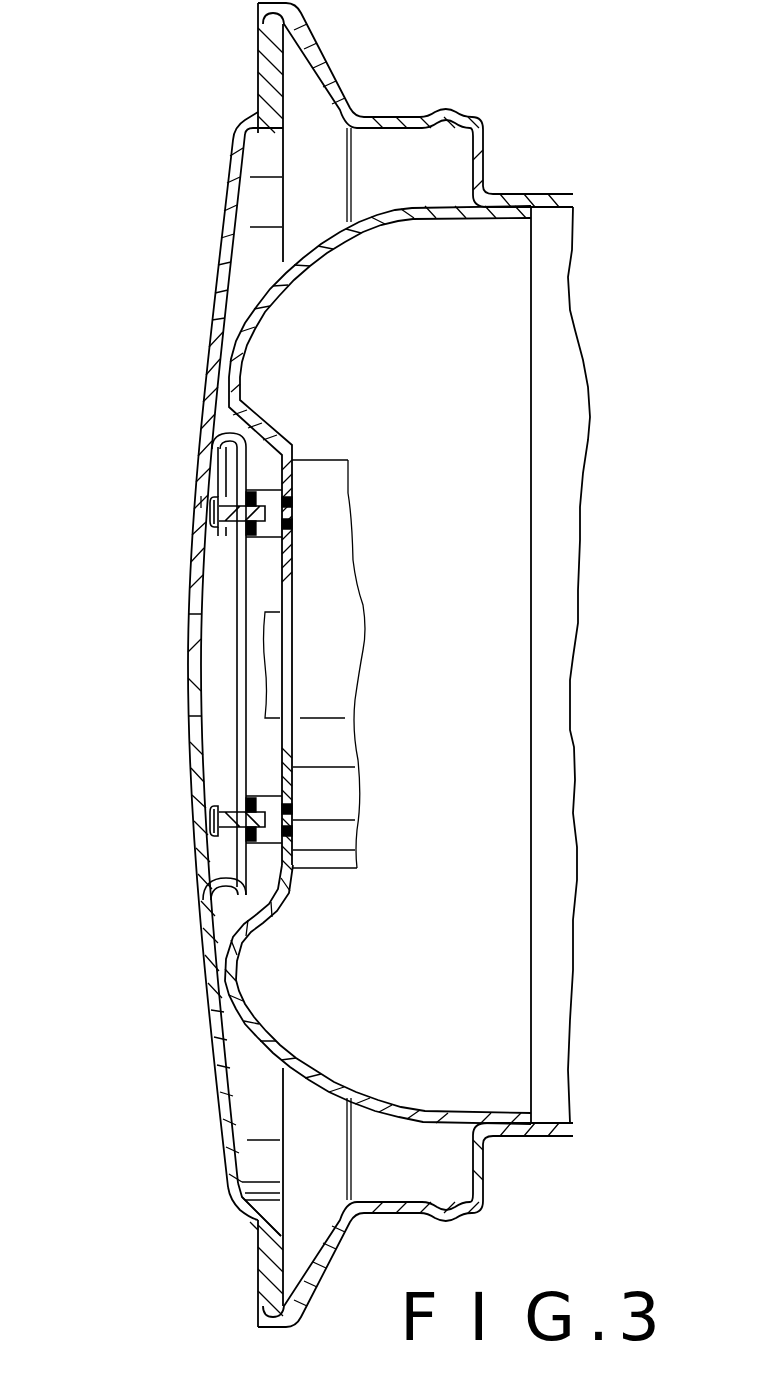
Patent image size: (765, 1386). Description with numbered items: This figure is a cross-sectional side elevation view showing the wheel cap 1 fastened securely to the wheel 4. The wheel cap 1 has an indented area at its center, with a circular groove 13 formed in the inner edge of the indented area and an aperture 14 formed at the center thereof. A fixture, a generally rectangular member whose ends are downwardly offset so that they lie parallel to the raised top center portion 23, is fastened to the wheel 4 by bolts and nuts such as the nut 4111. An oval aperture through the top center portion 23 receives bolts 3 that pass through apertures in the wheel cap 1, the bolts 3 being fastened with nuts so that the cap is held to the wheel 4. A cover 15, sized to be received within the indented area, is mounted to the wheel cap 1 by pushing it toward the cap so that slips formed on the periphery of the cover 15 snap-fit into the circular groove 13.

The wheel cap 1 is at (232, 141).
The bolts 3 is at (210, 525).
The wheel 4 is at (268, 292).
The circular groove 13 is at (212, 884).
The aperture 14 is at (242, 633).
The cover 15 is at (203, 502).
The top center portion 23 is at (243, 479).
The nut 4111 is at (216, 490).